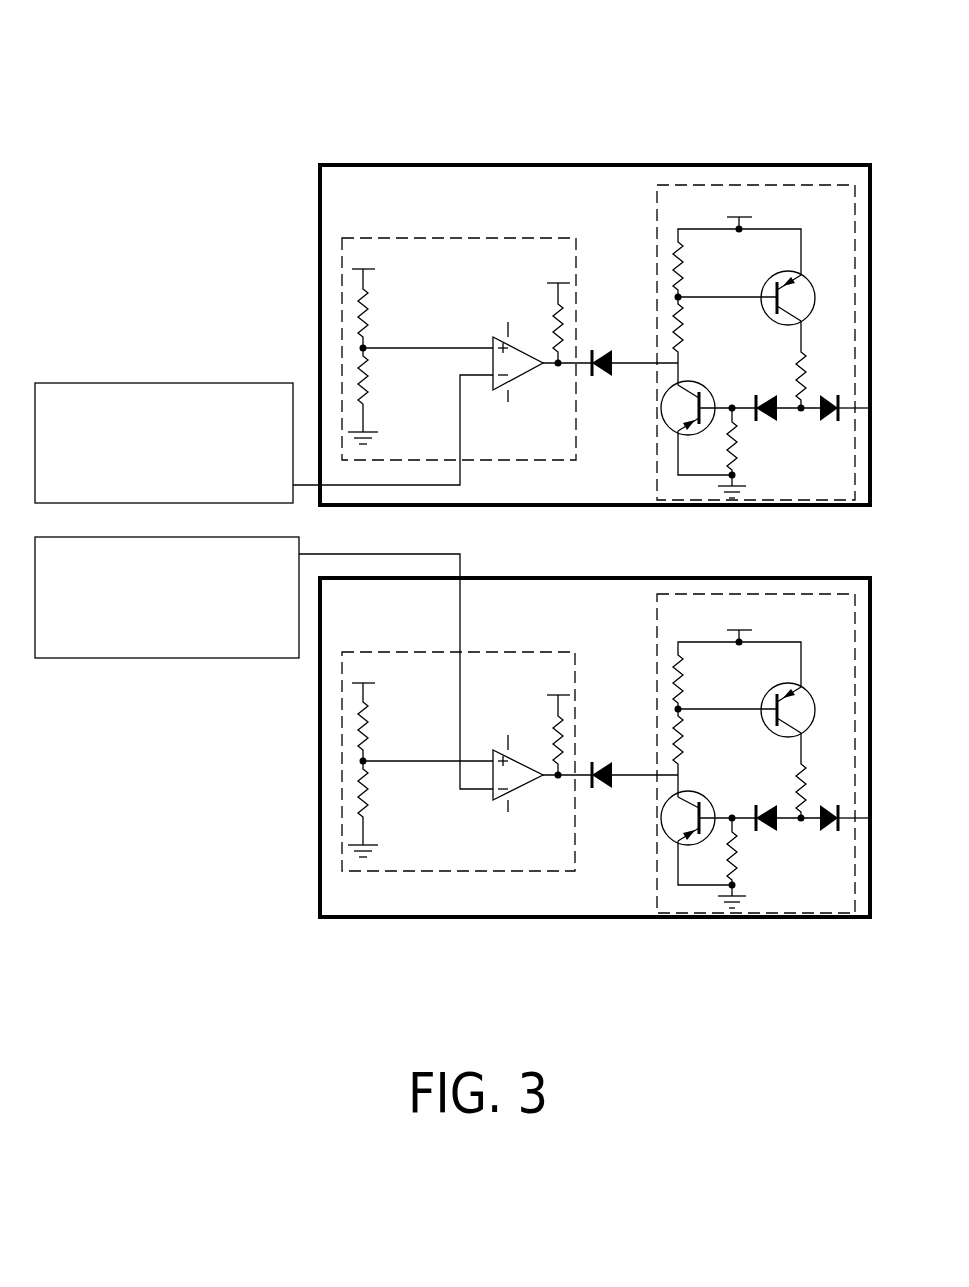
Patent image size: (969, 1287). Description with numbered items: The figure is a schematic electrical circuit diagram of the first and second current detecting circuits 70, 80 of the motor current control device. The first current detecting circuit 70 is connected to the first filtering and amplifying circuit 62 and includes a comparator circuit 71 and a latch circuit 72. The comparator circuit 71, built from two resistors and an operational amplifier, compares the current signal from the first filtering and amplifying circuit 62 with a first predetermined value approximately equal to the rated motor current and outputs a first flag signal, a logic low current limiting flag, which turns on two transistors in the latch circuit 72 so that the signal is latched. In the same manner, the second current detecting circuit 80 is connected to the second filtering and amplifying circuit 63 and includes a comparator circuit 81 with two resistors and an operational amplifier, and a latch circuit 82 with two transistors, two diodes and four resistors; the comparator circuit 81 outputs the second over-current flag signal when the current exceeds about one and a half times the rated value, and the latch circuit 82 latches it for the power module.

The first filtering and amplifying circuit 62 is at (130, 383).
The second filtering and amplifying circuit 63 is at (203, 650).
The first current detecting circuit 70 is at (609, 130).
The comparator circuit 71 is at (458, 245).
The latch circuit 72 is at (788, 185).
The second current detecting circuit 80 is at (599, 945).
The comparator circuit 81 is at (470, 858).
The latch circuit 82 is at (802, 902).